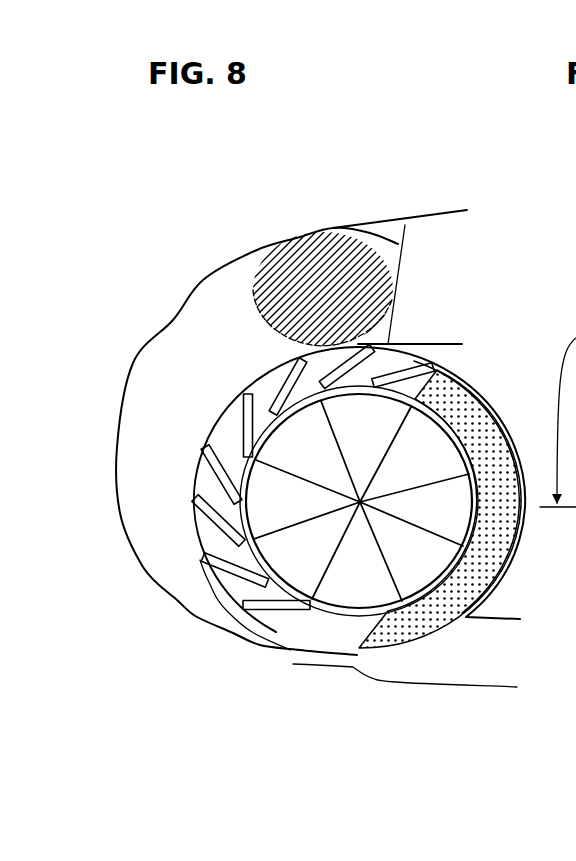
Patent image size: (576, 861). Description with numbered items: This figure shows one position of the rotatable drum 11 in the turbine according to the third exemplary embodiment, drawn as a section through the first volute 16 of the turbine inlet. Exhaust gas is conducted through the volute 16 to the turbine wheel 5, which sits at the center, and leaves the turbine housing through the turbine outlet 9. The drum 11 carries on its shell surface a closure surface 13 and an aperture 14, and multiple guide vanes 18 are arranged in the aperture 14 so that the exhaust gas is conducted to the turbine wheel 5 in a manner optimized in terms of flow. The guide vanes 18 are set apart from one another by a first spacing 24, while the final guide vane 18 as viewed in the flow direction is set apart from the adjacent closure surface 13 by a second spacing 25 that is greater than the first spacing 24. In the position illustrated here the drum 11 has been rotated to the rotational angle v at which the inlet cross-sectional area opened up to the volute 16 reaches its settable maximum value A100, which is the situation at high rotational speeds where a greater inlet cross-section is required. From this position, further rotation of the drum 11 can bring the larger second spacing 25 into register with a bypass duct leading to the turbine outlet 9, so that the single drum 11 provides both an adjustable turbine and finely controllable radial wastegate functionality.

The turbine wheel 5 is at (293, 443).
The turbine outlet 9 is at (510, 663).
The drum 11 is at (489, 430).
The closure surface 13 is at (470, 375).
The aperture 14 is at (221, 419).
The first volute 16 is at (427, 240).
The guide vanes 18 is at (217, 522).
The first spacing 24 is at (212, 597).
The second spacing 25 is at (293, 664).
The maximum inlet cross-sectional area A100 is at (283, 268).
The rotational angle v is at (398, 244).